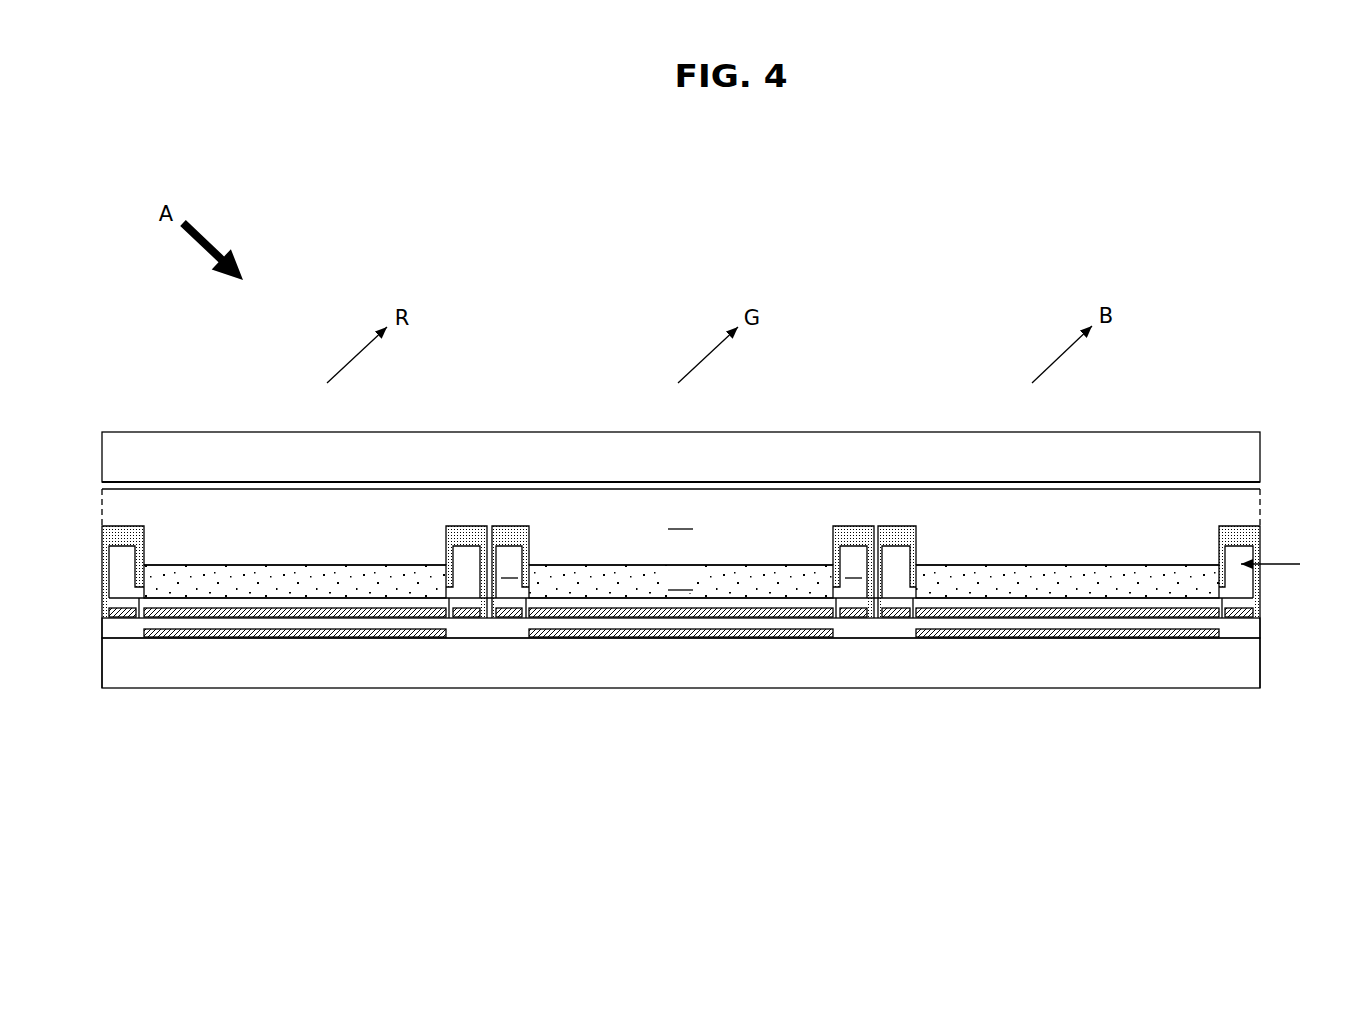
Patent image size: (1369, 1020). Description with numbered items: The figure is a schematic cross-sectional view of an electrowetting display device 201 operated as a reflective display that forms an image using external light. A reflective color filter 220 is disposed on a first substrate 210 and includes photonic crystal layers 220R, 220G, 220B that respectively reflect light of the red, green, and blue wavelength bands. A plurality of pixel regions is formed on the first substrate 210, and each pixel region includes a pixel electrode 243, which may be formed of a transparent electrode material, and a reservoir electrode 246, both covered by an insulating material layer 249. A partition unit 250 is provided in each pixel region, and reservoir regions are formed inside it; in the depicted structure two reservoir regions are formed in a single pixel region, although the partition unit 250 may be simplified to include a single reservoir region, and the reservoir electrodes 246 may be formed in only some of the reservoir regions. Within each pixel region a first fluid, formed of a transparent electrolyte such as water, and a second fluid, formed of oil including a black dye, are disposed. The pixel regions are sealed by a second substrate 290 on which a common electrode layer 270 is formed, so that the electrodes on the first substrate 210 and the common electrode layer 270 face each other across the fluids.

The electrowetting display device 201 is at (1264, 357).
The first substrate 210 is at (1250, 663).
The reflective color filter 220 is at (1250, 622).
The photonic crystal layer 220R is at (287, 636).
The photonic crystal layer 220G is at (724, 636).
The photonic crystal layer 220B is at (1072, 634).
The pixel electrode 243 is at (641, 612).
The reservoir electrode 246 is at (507, 617).
The insulating material layer 249 is at (792, 601).
The partition unit 250 is at (852, 533).
The common electrode layer 270 is at (1250, 487).
The second substrate 290 is at (1250, 452).